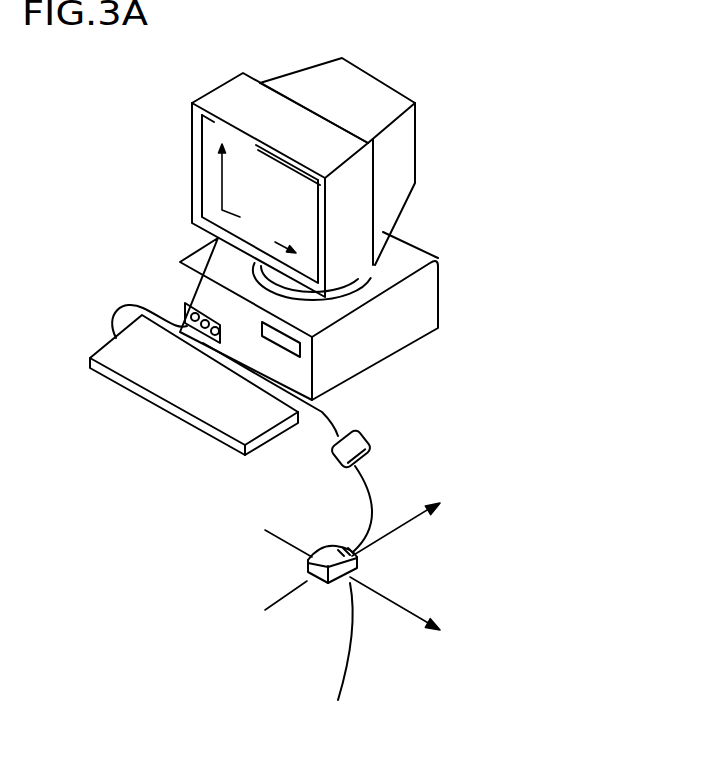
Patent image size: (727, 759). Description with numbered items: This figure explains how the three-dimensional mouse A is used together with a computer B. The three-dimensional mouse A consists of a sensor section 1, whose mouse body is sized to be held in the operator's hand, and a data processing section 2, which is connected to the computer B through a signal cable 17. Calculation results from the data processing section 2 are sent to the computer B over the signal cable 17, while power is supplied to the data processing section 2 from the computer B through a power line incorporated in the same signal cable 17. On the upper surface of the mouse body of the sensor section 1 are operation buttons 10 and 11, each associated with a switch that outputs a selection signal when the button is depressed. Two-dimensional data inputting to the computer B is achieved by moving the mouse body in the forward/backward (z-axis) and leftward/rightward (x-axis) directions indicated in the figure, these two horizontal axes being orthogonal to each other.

The computer B is at (438, 195).
The three-dimensional mouse A is at (482, 477).
The signal cable 17 is at (322, 412).
The data processing section 2 is at (363, 452).
The operation button 10 is at (333, 550).
The sensor section 1 is at (307, 565).
The operation button 11 is at (340, 658).